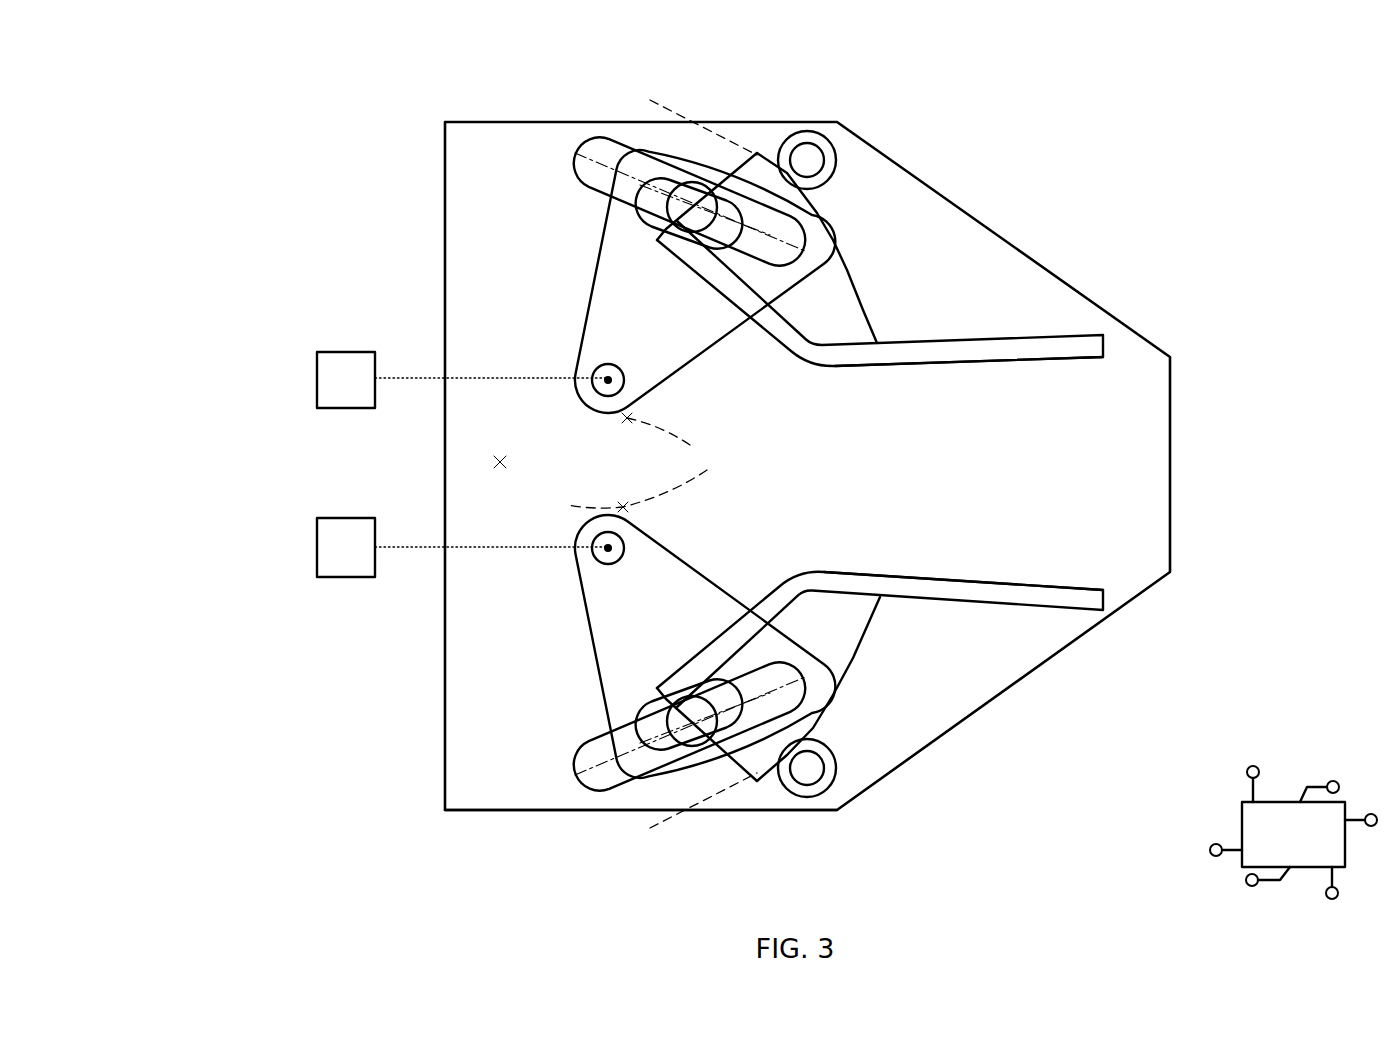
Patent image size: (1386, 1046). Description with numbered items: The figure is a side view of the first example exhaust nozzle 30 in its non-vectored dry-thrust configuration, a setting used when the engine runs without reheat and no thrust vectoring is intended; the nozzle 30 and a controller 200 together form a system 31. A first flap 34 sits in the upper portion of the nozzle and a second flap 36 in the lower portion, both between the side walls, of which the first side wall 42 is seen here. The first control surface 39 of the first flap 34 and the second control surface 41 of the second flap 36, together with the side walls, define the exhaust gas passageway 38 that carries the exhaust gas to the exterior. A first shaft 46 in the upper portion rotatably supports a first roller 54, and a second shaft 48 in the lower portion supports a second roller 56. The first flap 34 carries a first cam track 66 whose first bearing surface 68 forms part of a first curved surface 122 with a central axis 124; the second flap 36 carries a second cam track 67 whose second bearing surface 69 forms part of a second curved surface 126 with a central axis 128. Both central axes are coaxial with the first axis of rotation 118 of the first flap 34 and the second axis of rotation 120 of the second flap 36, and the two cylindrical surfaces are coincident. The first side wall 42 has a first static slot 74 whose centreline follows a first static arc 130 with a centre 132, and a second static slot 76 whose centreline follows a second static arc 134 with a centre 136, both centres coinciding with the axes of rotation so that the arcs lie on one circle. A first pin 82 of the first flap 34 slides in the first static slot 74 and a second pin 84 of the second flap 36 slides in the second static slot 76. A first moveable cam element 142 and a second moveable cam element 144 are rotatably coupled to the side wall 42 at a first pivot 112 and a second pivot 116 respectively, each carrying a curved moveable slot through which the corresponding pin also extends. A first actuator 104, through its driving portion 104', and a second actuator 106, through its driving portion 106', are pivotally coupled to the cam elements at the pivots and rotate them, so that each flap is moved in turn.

The exhaust nozzle 30 is at (871, 484).
The system 31 is at (224, 92).
The first flap 34 is at (882, 288).
The second flap 36 is at (880, 638).
The exhaust gas passageway 38 is at (807, 511).
The first control surface 39 is at (937, 367).
The second control surface 41 is at (920, 577).
The first side wall 42 is at (497, 812).
The first shaft 46 is at (859, 114).
The second shaft 48 is at (849, 819).
The first roller 54 is at (806, 150).
The second roller 56 is at (807, 792).
The first cam track 66 is at (858, 288).
The second cam track 67 is at (905, 638).
The first bearing surface 68 is at (873, 310).
The second bearing surface 69 is at (863, 640).
The first static slot 74 is at (573, 160).
The second static slot 76 is at (583, 792).
The first pin 82 is at (683, 212).
The second pin 84 is at (680, 713).
The first actuator 104 is at (334, 344).
The driving portion of the first actuator 104' is at (491, 408).
The second actuator 106 is at (338, 581).
The driving portion of the second actuator 106' is at (491, 524).
The first pivot 112 is at (597, 372).
The second pivot 116 is at (600, 557).
The first axis of rotation 118 is at (347, 451).
The second axis of rotation 120 is at (347, 451).
The first curved surface 122 is at (683, 112).
The central axis 124 is at (347, 451).
The second curved surface 126 is at (687, 813).
The central axis 128 is at (347, 451).
The first static arc 130 is at (618, 168).
The centre 132 is at (347, 451).
The second static arc 134 is at (585, 757).
The centre 136 is at (498, 462).
The first moveable cam element 142 is at (629, 332).
The second moveable cam element 144 is at (629, 628).
The controller 200 is at (1268, 846).